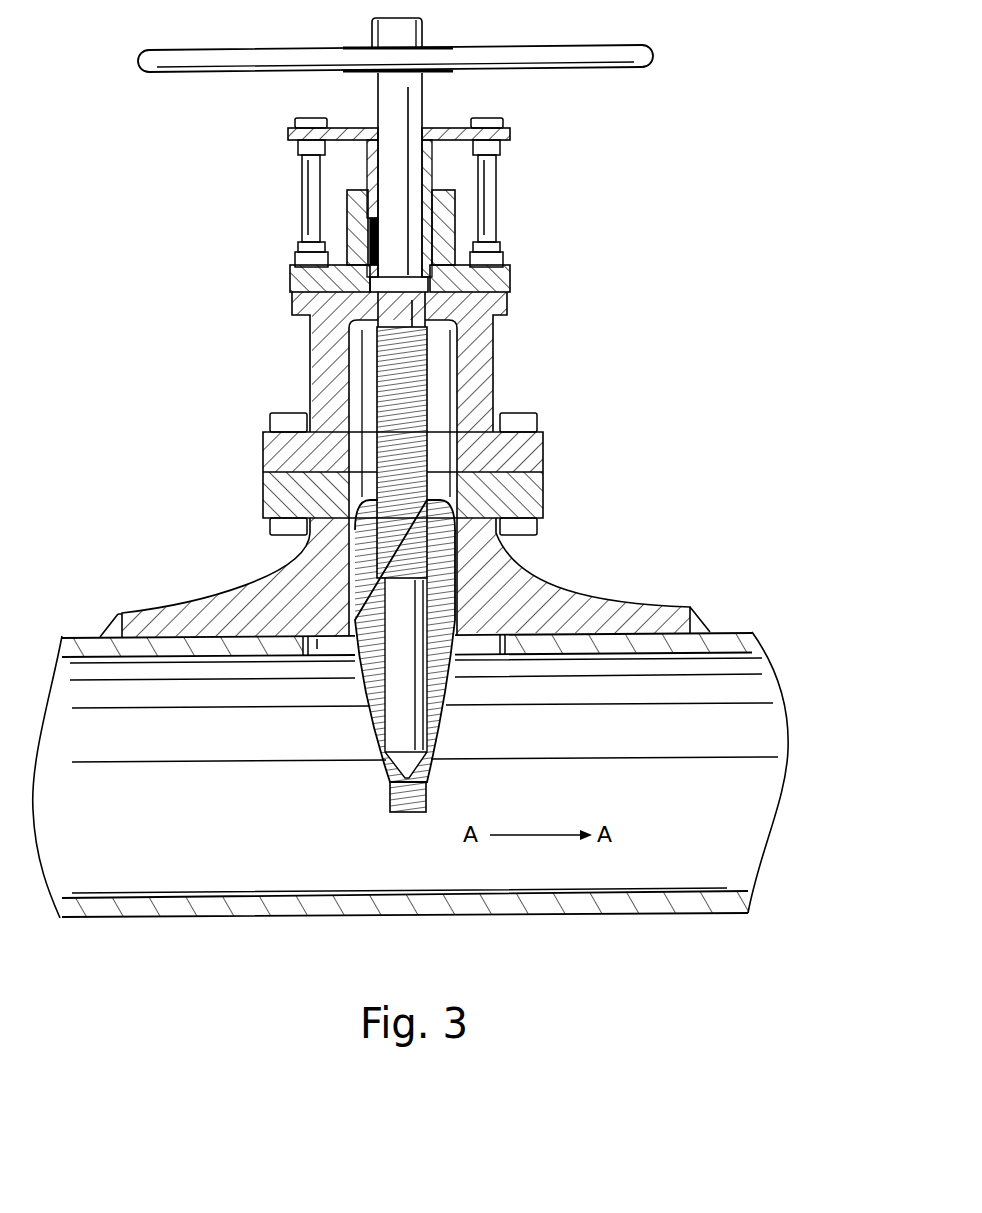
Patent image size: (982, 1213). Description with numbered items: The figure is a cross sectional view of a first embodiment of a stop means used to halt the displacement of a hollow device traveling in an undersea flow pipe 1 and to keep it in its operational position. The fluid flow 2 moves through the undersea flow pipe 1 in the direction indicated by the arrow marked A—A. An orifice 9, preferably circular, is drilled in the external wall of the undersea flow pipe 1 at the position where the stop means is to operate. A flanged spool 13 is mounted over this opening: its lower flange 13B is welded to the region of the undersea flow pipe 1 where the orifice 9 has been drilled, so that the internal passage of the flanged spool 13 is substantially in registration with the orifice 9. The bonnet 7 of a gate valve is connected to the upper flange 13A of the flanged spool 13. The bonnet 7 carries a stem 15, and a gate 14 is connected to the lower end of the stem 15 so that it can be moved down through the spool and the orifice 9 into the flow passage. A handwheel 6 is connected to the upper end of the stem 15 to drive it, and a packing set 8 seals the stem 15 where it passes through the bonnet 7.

The undersea flow pipe 1 is at (735, 638).
The fluid flow 2 is at (727, 798).
The handwheel 6 is at (593, 57).
The bonnet 7 is at (338, 393).
The packing set 8 is at (370, 238).
The orifice 9 is at (330, 647).
The flanged spool 13 is at (325, 587).
The upper flange 13A is at (262, 488).
The lower flange 13B is at (113, 634).
The gate 14 is at (437, 675).
The stem 15 is at (398, 317).